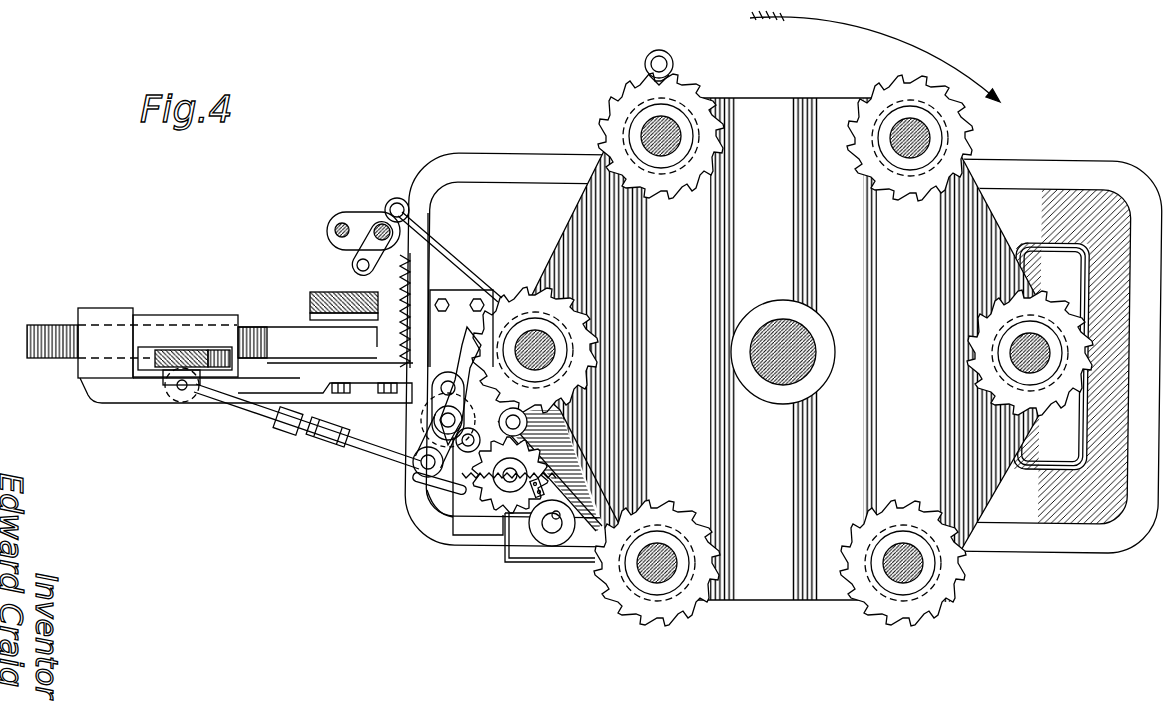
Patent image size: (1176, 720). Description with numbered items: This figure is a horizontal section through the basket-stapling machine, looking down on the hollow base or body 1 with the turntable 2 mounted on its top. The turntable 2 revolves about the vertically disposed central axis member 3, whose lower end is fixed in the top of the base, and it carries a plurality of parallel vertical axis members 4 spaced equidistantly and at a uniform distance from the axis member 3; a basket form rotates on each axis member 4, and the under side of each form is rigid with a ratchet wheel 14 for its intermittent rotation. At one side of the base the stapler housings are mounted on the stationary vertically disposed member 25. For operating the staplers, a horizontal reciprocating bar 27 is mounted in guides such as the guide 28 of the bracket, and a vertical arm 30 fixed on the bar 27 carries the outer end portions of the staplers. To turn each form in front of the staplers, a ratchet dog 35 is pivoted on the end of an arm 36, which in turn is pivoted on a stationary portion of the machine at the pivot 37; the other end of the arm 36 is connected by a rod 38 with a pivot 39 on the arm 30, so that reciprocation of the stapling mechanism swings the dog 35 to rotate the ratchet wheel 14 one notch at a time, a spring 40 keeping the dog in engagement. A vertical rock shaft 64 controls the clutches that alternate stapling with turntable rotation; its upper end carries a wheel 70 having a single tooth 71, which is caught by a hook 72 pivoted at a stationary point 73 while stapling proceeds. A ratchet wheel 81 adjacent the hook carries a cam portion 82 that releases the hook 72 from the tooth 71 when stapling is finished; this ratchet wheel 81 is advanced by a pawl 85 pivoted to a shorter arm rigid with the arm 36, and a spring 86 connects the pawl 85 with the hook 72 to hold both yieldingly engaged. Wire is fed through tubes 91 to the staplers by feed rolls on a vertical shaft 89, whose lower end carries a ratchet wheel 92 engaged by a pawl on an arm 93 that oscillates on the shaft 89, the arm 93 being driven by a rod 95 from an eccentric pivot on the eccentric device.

The hollow base or body 1 is at (1039, 195).
The turntable 2 is at (783, 351).
The axis member 3 is at (776, 330).
The axis members 4 is at (650, 134).
The ratchet wheel 14 is at (690, 92).
The vertically disposed member 25 is at (312, 306).
The reciprocating bar 27 is at (48, 323).
The guide 28 is at (101, 310).
The arm 30 is at (177, 345).
The ratchet dog 35 is at (455, 349).
The arm 36 is at (400, 458).
The pivot 37 is at (440, 420).
The rod 38 is at (274, 420).
The pivot 39 is at (180, 391).
The spring 40 is at (412, 272).
The rock shaft 64 is at (548, 540).
The wheel 70 is at (547, 530).
The tooth 71 is at (577, 523).
The hook 72 is at (580, 533).
The pivot 73 is at (524, 416).
The ratchet wheel 81 is at (497, 503).
The cam portion 82 is at (500, 533).
The ratchet dog or pawl 85 is at (452, 491).
The spring 86 is at (495, 502).
The shaft 89 is at (378, 222).
The tubes 91 is at (342, 250).
The ratchet wheel 92 is at (397, 203).
The arm 93 is at (372, 248).
The rod 95 is at (440, 238).